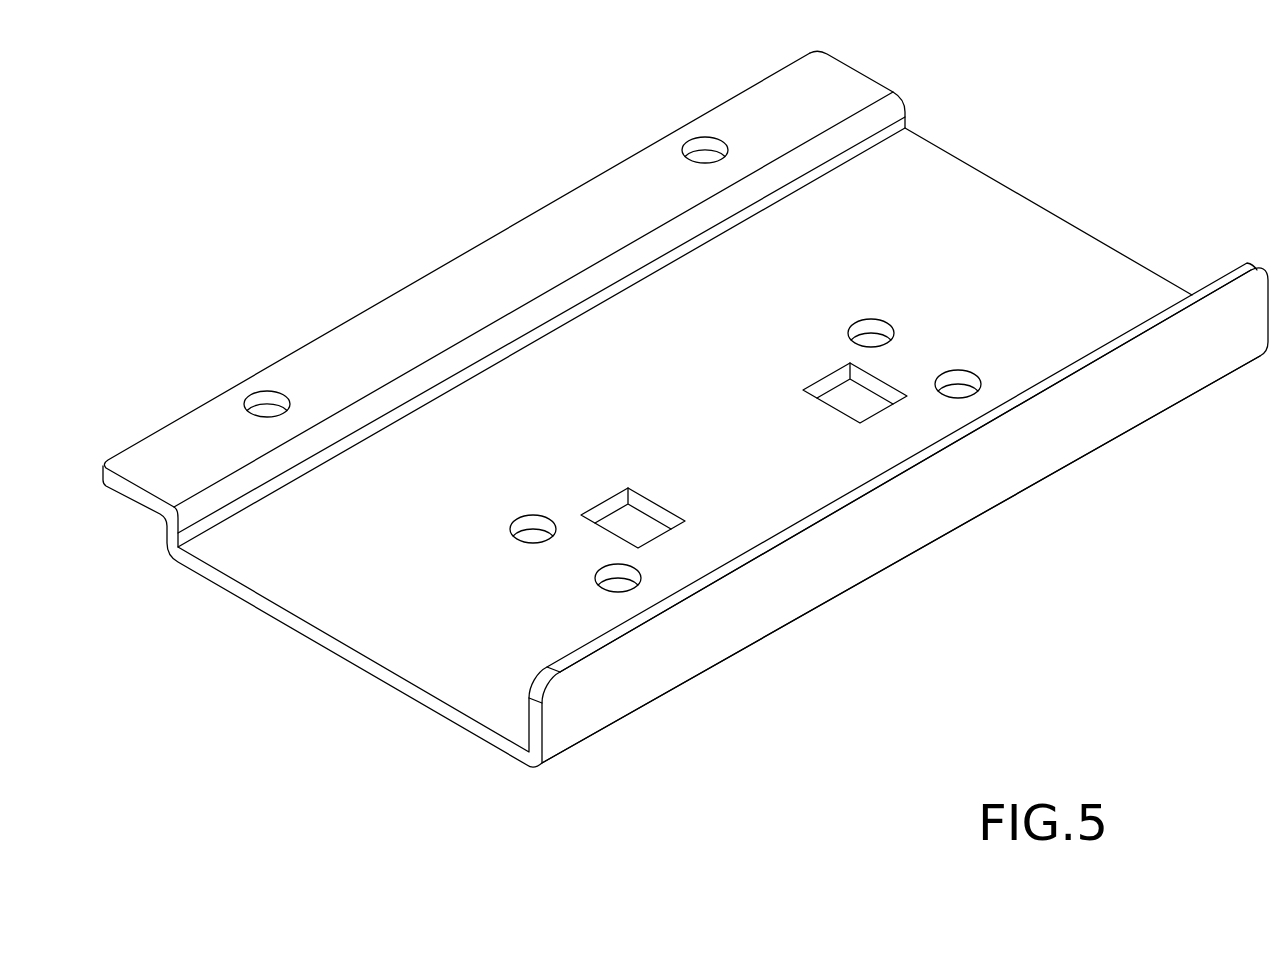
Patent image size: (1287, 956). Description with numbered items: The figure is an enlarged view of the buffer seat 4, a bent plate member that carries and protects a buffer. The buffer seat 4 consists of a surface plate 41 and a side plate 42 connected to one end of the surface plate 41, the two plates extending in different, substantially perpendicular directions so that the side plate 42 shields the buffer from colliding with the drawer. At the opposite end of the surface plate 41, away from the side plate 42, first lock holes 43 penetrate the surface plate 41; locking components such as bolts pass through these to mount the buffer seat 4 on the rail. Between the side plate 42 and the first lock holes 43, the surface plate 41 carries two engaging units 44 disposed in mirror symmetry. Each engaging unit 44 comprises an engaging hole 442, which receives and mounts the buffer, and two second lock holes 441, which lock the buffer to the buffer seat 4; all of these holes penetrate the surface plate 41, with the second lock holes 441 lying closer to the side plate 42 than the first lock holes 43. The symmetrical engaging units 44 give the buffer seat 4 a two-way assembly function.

The buffer seat 4 is at (406, 223).
The surface plate 41 is at (280, 580).
The side plate 42 is at (970, 502).
The first lock hole 43 is at (268, 398).
The engaging unit 44 is at (744, 391).
The second lock hole 441 is at (608, 575).
The engaging hole 442 is at (739, 389).